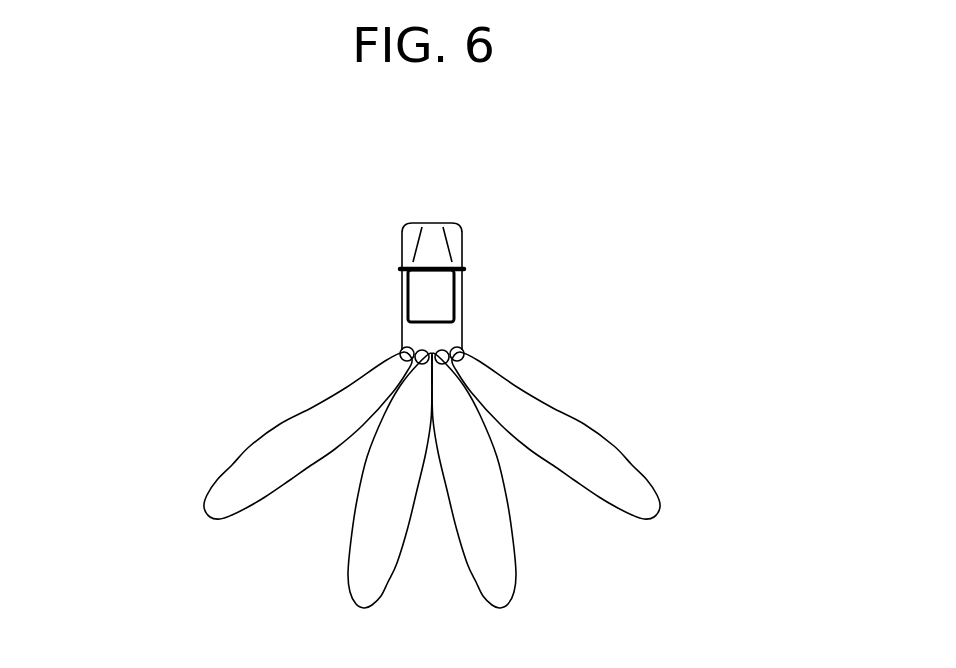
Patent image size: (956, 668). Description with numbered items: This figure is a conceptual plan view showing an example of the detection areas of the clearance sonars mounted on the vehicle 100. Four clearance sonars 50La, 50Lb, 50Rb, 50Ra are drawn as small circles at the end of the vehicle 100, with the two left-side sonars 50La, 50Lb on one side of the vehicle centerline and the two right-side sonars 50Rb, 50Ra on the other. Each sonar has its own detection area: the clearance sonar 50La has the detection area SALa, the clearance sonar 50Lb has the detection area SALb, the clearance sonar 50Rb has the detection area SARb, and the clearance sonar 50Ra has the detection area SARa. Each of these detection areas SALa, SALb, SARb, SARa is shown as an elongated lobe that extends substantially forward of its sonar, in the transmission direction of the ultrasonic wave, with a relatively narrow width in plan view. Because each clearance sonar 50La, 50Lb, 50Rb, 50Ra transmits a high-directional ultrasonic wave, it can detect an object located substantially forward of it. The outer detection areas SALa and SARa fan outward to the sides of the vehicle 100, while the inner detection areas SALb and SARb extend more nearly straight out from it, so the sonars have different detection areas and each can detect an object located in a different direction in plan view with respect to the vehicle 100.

The vehicle 100 is at (430, 226).
The clearance sonar 50La is at (401, 351).
The clearance sonar 50Lb is at (413, 347).
The clearance sonar 50Rb is at (451, 347).
The clearance sonar 50Ra is at (463, 351).
The detection area SALa is at (217, 476).
The detection area SALb is at (347, 565).
The detection area SARb is at (515, 563).
The detection area SARa is at (643, 475).